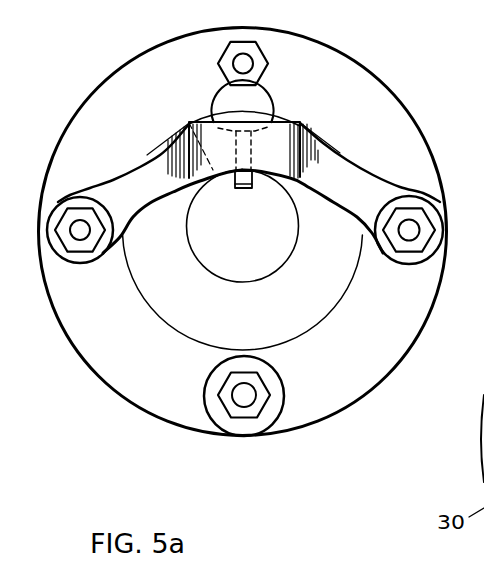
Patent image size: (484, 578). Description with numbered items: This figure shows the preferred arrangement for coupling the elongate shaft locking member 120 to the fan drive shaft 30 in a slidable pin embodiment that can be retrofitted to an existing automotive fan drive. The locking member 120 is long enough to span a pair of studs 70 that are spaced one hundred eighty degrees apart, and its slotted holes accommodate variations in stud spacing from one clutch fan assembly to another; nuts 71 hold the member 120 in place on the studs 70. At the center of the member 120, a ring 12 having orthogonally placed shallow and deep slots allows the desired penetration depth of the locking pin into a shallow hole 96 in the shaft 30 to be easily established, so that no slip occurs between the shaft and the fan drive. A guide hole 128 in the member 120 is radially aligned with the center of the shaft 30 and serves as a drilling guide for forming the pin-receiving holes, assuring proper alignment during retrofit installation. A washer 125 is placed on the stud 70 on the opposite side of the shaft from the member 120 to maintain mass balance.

The ring 12 is at (271, 94).
The guide hole 128 is at (189, 124).
The elongate shaft locking member 120 is at (348, 178).
The studs 70 is at (77, 228).
The nuts 71 is at (423, 218).
The shallow holes 96 is at (244, 188).
The fan drive shaft 30 is at (207, 233).
The washer 125 is at (204, 392).